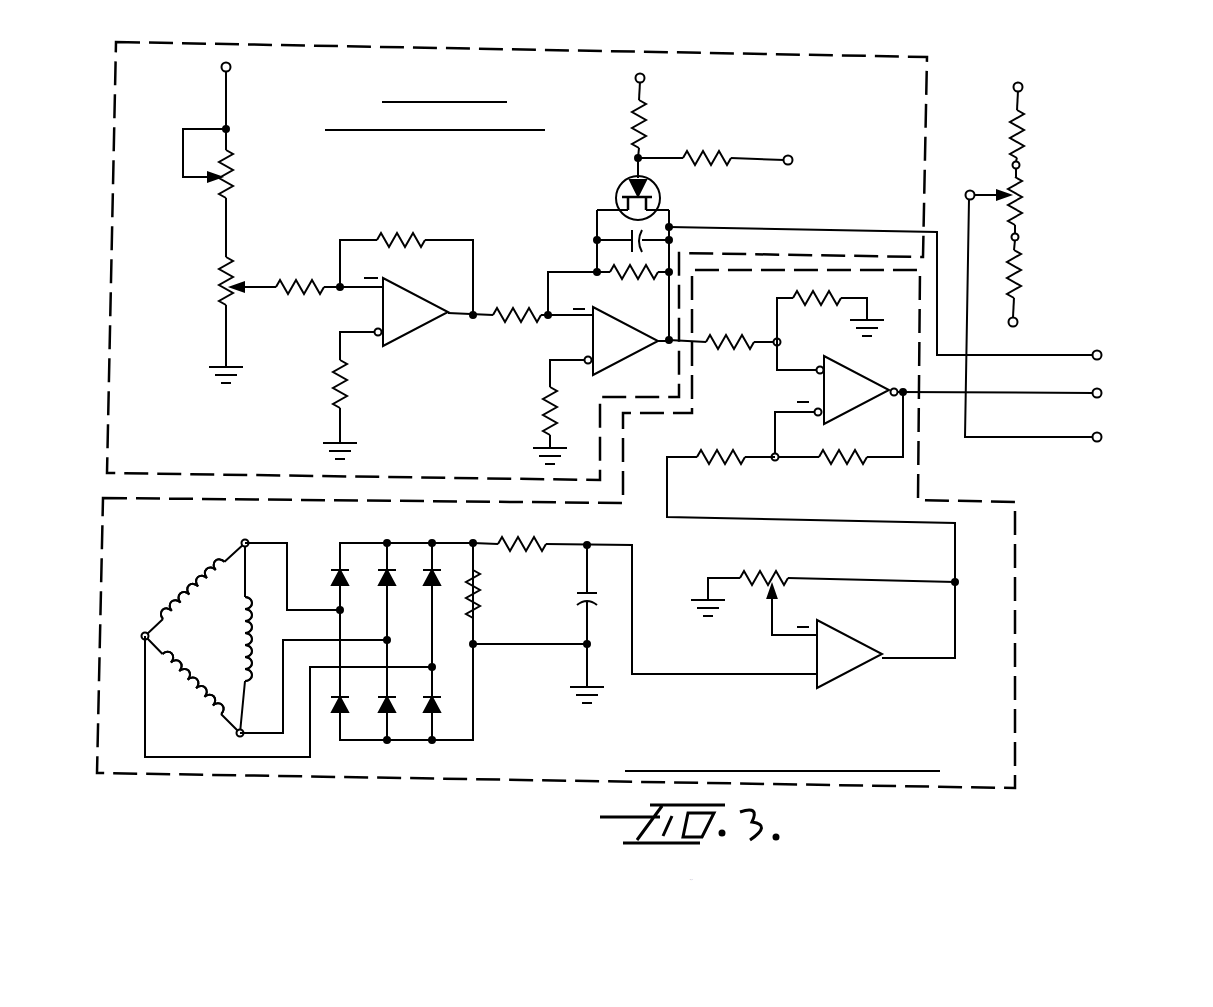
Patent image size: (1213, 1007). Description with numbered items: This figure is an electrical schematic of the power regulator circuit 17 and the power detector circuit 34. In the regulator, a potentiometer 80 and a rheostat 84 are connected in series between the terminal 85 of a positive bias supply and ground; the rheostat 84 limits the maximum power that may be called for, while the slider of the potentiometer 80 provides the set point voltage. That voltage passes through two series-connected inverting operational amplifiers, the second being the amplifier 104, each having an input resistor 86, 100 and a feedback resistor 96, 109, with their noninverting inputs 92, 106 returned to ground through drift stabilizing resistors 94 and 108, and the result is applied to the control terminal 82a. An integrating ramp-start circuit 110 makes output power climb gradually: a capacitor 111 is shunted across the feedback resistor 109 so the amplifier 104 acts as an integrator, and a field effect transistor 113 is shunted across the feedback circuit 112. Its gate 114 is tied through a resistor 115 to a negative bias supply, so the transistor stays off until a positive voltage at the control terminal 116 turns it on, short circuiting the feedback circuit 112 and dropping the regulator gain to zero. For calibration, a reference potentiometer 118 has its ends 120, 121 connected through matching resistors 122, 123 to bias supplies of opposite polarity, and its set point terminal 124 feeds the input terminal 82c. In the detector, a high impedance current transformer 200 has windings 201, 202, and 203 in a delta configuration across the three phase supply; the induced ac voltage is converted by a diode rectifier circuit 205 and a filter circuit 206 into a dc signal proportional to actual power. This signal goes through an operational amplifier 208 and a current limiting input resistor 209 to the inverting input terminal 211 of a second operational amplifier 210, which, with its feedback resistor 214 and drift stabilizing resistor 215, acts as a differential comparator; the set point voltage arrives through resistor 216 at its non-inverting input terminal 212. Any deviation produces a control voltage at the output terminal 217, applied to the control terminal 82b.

The power regulator circuit 17 is at (112, 155).
The power detector circuit 34 is at (1016, 681).
The potentiometer 80 is at (213, 277).
The control terminal 82a is at (1101, 356).
The control terminal 82b is at (1101, 394).
The input terminal 82c is at (1101, 438).
The rheostat 84 is at (238, 173).
The terminal 85 is at (221, 67).
The input resistor 86 is at (290, 279).
The noninverting input 92 is at (374, 330).
The drift stabilizing resistor 94 is at (336, 384).
The feedback resistor 96 is at (408, 237).
The input resistor 100 is at (516, 311).
The operational amplifier 104 is at (626, 362).
The noninverting input 106 is at (585, 359).
The drift stabilizing resistor 108 is at (546, 401).
The feedback resistor 109 is at (633, 277).
The integrating ramp-start circuit 110 is at (585, 206).
The capacitor 111 is at (628, 238).
The feedback circuit 112 is at (686, 217).
The field effect transistor 113 is at (617, 182).
The gate 114 is at (634, 154).
The resistor 115 is at (650, 126).
The control terminal 116 is at (792, 160).
The reference potentiometer 118 is at (1030, 197).
The end 120 is at (1020, 166).
The end 121 is at (1020, 238).
The matching resistor 122 is at (1024, 153).
The matching resistor 123 is at (1022, 279).
The set point terminal 124 is at (970, 190).
The current transformer 200 is at (177, 645).
The winding 201 is at (190, 582).
The winding 202 is at (255, 592).
The winding 203 is at (178, 700).
The diode rectifier circuit 205 is at (452, 688).
The filter circuit 206 is at (616, 572).
The operational amplifier 208 is at (842, 681).
The current limiting input resistor 209 is at (722, 459).
The operational amplifier 210 is at (852, 415).
The inverting input terminal 211 is at (814, 413).
The non-inverting input terminal 212 is at (816, 371).
The feedback resistor 214 is at (843, 459).
The drift stabilizing resistor 215 is at (818, 300).
The resistor 216 is at (733, 340).
The output terminal 217 is at (895, 388).